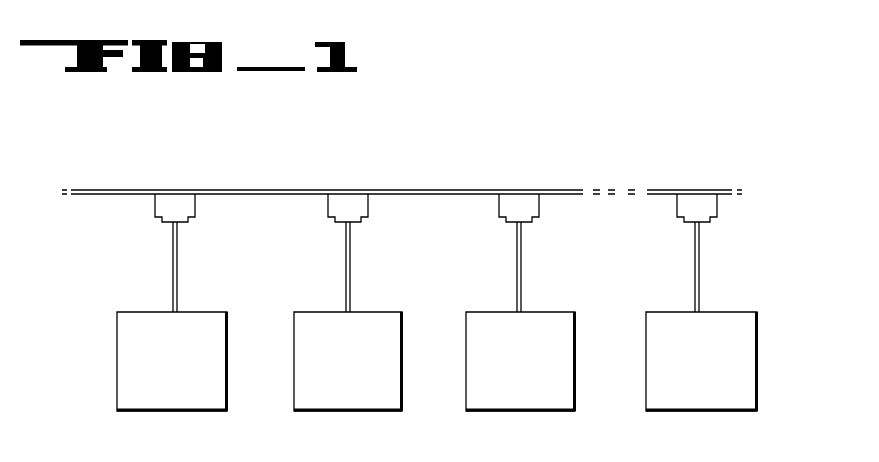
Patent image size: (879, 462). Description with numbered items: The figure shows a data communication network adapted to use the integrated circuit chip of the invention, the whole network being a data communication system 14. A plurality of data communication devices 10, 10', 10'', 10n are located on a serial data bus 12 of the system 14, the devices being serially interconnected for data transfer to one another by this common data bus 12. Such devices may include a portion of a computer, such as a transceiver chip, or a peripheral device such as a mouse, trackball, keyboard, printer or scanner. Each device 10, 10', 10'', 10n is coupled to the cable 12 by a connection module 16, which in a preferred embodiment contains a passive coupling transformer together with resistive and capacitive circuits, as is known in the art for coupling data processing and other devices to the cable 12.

The data communication device 10 is at (191, 361).
The data communication device 10' is at (369, 361).
The data communication device 10'' is at (542, 361).
The data communication device 10n is at (757, 355).
The serial data bus 12 is at (233, 190).
The data communication system 14 is at (741, 217).
The connection module 16 is at (370, 208).